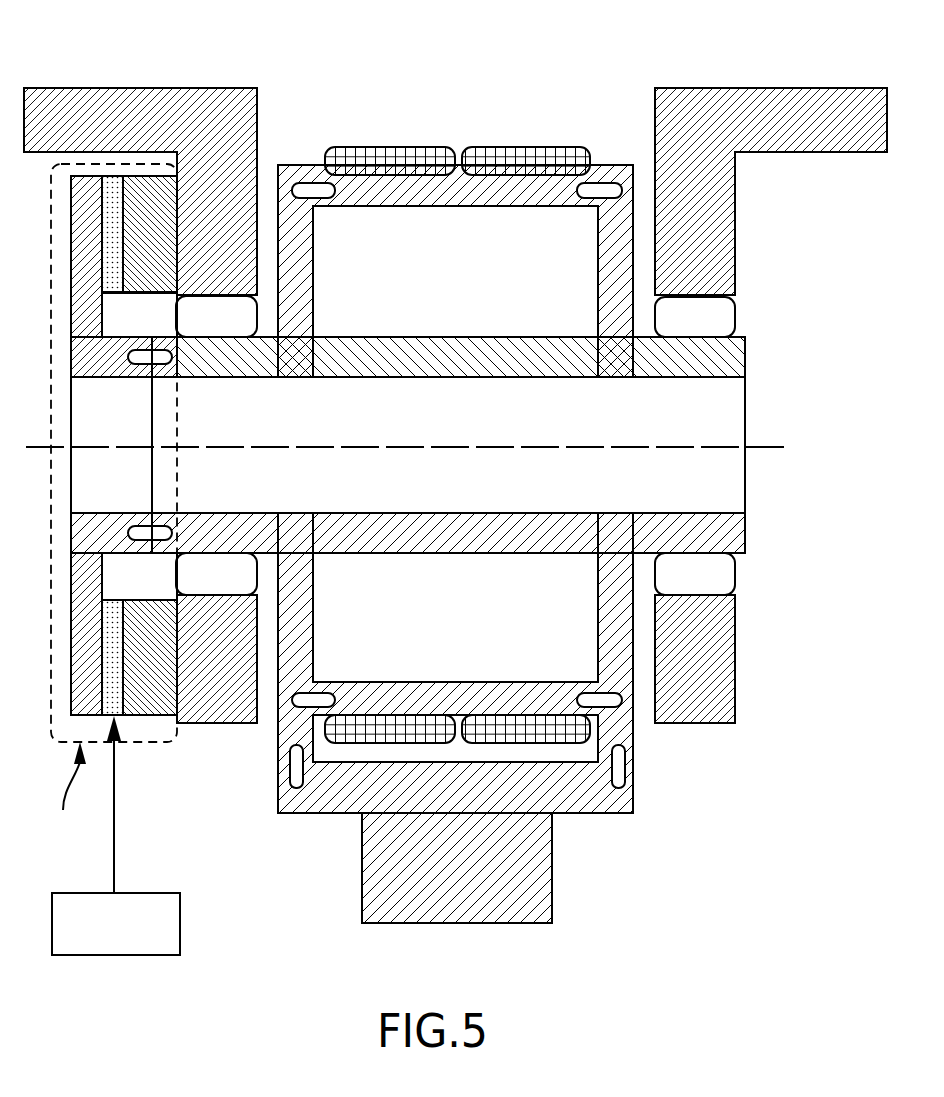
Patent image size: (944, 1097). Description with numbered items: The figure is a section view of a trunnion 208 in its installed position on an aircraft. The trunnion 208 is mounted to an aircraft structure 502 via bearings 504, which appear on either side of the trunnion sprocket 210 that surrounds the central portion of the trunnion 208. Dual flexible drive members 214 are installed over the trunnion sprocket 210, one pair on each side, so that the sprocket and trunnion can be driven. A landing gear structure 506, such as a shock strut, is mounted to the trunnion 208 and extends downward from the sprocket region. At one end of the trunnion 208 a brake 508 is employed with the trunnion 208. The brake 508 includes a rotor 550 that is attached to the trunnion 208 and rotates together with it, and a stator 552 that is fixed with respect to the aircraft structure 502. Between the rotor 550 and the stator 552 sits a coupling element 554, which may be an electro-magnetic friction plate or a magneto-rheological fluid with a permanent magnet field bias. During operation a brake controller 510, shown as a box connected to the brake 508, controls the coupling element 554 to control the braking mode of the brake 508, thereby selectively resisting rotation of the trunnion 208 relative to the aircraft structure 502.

The aircraft structure 502 is at (160, 88).
The bearings 504 is at (177, 318).
The landing gear structure 506 is at (552, 880).
The brake 508 is at (67, 791).
The brake controller 510 is at (180, 920).
The rotor 550 is at (75, 265).
The stator 552 is at (177, 210).
The coupling element 554 is at (106, 176).
The trunnion 208 is at (745, 357).
The trunnion sprocket 210 is at (312, 160).
The flexible drive members 214 is at (394, 147).